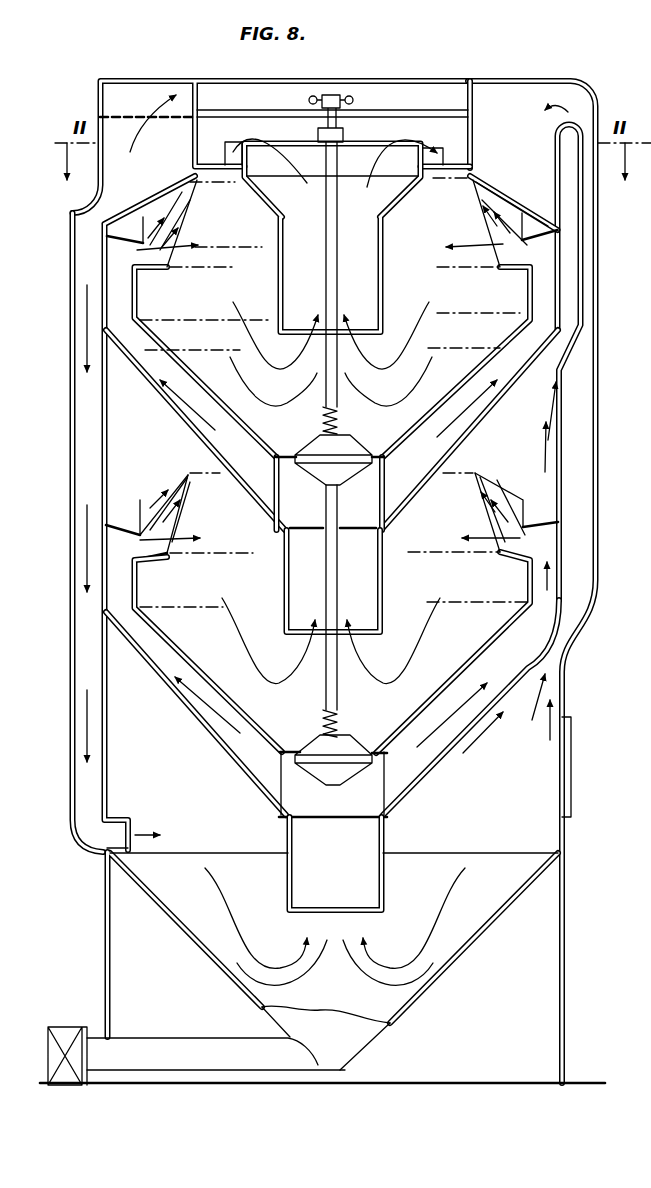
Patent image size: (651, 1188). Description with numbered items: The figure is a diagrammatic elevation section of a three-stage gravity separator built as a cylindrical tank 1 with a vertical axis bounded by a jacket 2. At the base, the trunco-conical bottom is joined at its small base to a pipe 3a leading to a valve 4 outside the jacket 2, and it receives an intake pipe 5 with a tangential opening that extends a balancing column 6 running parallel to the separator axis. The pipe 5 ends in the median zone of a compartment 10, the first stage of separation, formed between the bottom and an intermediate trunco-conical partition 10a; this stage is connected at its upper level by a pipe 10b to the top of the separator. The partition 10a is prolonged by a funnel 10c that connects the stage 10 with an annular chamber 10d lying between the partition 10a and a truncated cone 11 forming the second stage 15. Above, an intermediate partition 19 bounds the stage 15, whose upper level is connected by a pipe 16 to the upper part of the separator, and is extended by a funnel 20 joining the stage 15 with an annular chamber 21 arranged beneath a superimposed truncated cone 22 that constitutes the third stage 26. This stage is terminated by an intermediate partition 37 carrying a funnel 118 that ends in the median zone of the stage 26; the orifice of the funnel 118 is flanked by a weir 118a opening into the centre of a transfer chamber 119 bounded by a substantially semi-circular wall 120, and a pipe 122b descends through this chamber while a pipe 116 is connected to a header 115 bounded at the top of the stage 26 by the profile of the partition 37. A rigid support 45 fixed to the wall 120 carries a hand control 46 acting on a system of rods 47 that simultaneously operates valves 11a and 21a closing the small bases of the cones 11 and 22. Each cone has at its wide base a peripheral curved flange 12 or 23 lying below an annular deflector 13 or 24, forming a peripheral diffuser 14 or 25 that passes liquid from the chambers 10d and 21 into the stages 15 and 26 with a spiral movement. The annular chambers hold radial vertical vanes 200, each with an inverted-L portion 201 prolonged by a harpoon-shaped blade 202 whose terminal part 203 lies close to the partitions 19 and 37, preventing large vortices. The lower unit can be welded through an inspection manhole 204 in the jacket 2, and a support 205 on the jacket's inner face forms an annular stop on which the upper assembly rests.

The cylindrical tank 1 is at (566, 695).
The jacket 2 is at (568, 893).
The pipe 3a is at (186, 1050).
The valve 4 is at (76, 1028).
The intake pipe 5 is at (97, 850).
The balancing column 6 is at (72, 575).
The compartment 10 is at (332, 579).
The intermediate trunco-conical partition 10a is at (431, 767).
The pipe 10b is at (597, 578).
The funnel 10c is at (384, 882).
The annular chamber 10d is at (378, 790).
The cone 11 is at (490, 654).
The valve 11a is at (340, 747).
The peripheral curved flange 12 is at (515, 558).
The annular deflector 13 is at (540, 517).
The peripheral diffuser 14 is at (483, 522).
The stage 15 is at (253, 578).
The pipe 16 is at (578, 262).
The intermediate partition 19 is at (421, 493).
The funnel 20 is at (384, 578).
The annular chamber 21 is at (374, 525).
The valve 21a is at (313, 435).
The truncated cone 22 is at (470, 376).
The peripheral curved flange 23 is at (498, 268).
The annular deflector 24 is at (540, 225).
The peripheral diffuser 25 is at (482, 212).
The stage of separation 26 is at (408, 248).
The intermediate partition 37 is at (443, 172).
The rigid support 45 is at (412, 117).
The hand control 46 is at (342, 93).
The system of rods 47 is at (340, 399).
The header 115 is at (491, 165).
The pipe 116 is at (549, 126).
The funnel 118 is at (384, 296).
The weir 118a is at (444, 151).
The transfer chamber 119 is at (445, 124).
The wall 120 is at (487, 80).
The pipe 122b is at (165, 78).
The vertical vanes 200 is at (498, 344).
The portion 201 is at (558, 300).
The blade 202 is at (480, 243).
The terminal part 203 is at (482, 178).
The inspection door 204 is at (573, 800).
The support 205 is at (104, 333).